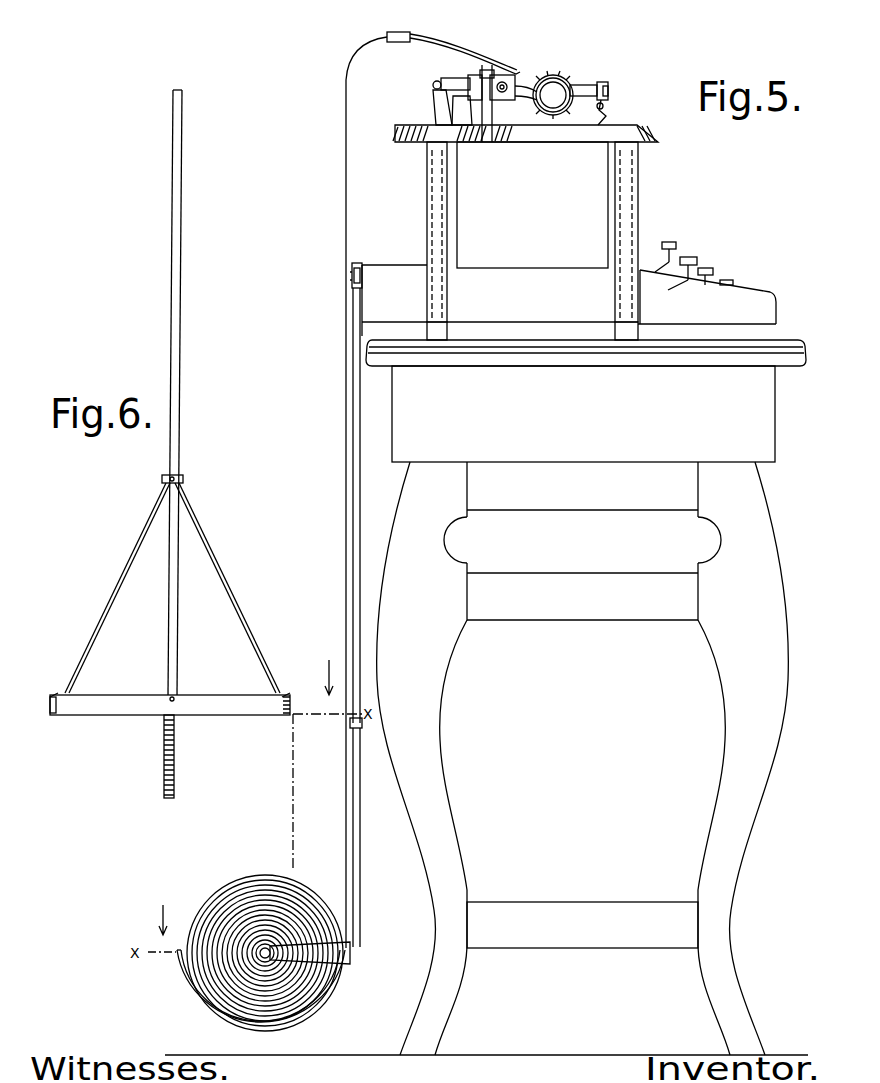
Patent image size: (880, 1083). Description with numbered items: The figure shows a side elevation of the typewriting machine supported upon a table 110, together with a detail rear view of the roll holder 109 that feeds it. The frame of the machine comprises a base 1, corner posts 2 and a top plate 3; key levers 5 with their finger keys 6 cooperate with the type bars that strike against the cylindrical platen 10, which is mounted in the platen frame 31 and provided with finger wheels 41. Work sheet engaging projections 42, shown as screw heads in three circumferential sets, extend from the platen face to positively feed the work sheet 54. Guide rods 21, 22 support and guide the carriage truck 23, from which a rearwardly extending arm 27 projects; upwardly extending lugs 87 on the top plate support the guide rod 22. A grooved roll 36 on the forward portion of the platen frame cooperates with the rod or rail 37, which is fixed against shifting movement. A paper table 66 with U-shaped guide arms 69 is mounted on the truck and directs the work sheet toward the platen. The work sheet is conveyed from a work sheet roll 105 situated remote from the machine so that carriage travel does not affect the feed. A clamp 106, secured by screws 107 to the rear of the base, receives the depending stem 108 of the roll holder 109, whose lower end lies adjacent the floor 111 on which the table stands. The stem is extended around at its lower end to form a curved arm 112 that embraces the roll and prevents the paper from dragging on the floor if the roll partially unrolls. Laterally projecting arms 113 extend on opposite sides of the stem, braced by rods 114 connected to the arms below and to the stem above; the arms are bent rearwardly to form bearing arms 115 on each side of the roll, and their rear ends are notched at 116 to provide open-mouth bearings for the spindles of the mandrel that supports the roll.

In FIG. 5, the base 1 is at (569, 239).
In FIG. 5, the corner posts 2 is at (430, 190).
In FIG. 5, the top plate 3 is at (570, 135).
In FIG. 5, the key levers 5 is at (694, 263).
In FIG. 5, the finger keys 6 is at (686, 256).
In FIG. 5, the platen 10 is at (554, 74).
In FIG. 5, the guide rod 21 is at (487, 142).
In FIG. 5, the guide rod 22 is at (433, 87).
In FIG. 5, the carriage truck 23 is at (503, 99).
In FIG. 5, the rearwardly extending arm 27 is at (449, 78).
In FIG. 5, the platen frame 31 is at (586, 85).
In FIG. 5, the grooved roll 36 is at (604, 88).
In FIG. 5, the rod or rail 37 is at (604, 110).
In FIG. 5, the finger wheels 41 is at (553, 95).
In FIG. 5, the work sheet engaging projections 42 is at (541, 78).
In FIG. 5, the work sheet 54 is at (347, 175).
In FIG. 5, the paper table 66 is at (436, 42).
In FIG. 5, the guide arms 69 is at (398, 32).
In FIG. 5, the lugs 87 is at (446, 104).
In FIG. 5, the work sheet roll 105 is at (220, 894).
In FIG. 5, the clamp 106 is at (355, 263).
In FIG. 5, the screws 107 is at (352, 283).
In FIG. 5, the stem 108 is at (360, 406).
In FIG. 6, the stem 108 is at (176, 280).
In FIG. 6, the roll holder 109 is at (189, 456).
In FIG. 5, the table 110 is at (586, 697).
In FIG. 5, the floor 111 is at (354, 1056).
In FIG. 5, the curved arm 112 is at (190, 990).
In FIG. 6, the curved arm 112 is at (174, 784).
In FIG. 6, the laterally projecting arms 113 is at (170, 705).
In FIG. 5, the brace rods 114 is at (352, 822).
In FIG. 6, the brace rods 114 is at (112, 597).
In FIG. 5, the bearing arms 115 is at (316, 841).
In FIG. 6, the bearing arms 115 is at (50, 713).
In FIG. 5, the bifurcated or notched bearings 116 is at (265, 948).